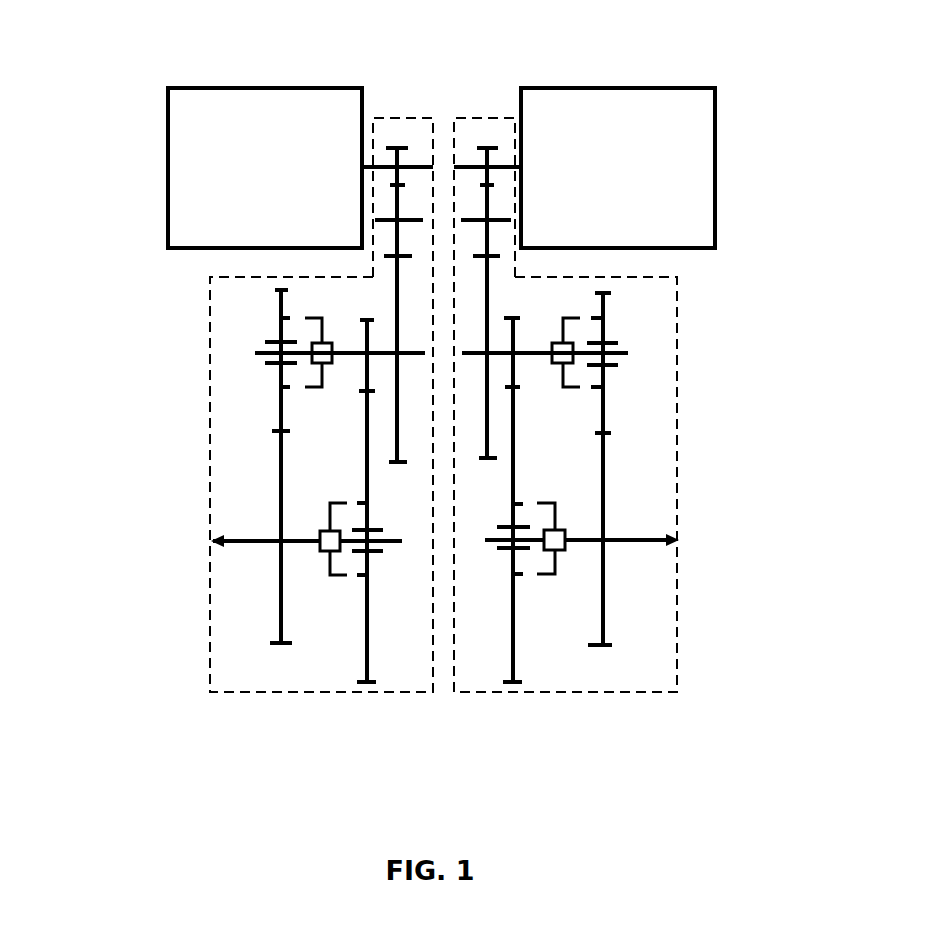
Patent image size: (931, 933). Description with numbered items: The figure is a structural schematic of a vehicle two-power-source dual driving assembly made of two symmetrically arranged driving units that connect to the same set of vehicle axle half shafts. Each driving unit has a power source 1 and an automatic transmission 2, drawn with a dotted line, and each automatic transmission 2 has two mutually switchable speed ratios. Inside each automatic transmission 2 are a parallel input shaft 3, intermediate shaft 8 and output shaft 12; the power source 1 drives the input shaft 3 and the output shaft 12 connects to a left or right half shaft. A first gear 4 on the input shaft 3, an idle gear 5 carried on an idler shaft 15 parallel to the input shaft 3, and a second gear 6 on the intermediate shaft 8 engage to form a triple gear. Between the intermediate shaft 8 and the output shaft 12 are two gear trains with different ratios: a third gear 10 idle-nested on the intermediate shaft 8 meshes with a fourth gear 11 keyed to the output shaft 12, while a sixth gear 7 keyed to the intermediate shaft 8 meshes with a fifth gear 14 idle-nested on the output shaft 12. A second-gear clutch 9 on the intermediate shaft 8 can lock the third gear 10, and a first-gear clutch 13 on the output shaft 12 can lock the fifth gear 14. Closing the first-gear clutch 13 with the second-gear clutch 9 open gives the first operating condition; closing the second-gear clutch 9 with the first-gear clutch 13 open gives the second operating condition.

The power source 1 is at (265, 152).
The automatic transmission 2 is at (210, 530).
The input shaft 3 is at (373, 163).
The first gear 4 is at (385, 166).
The idle gear 5 is at (400, 202).
The idler shaft 15 is at (413, 220).
The second gear 6 is at (397, 278).
The sixth gear 7 is at (367, 320).
The intermediate shaft 8 is at (270, 345).
The second-gear clutch 9 is at (280, 385).
The third gear 10 is at (278, 430).
The fourth gear 11 is at (279, 492).
The output shaft 12 is at (310, 541).
The first-gear clutch 13 is at (347, 577).
The fifth gear 14 is at (367, 640).